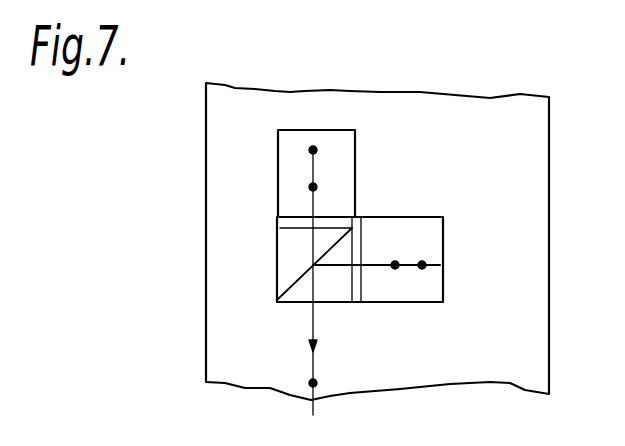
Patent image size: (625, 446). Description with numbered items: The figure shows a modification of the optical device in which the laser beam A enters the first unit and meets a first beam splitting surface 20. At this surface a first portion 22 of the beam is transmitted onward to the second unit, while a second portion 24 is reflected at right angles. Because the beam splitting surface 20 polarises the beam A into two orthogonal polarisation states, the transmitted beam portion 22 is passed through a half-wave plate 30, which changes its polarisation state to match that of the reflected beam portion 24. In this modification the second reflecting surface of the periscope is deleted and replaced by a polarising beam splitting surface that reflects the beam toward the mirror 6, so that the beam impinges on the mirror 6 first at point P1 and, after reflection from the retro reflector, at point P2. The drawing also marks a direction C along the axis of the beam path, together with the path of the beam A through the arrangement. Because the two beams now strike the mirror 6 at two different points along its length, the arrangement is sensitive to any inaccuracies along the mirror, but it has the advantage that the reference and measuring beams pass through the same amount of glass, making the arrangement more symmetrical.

The mirror 6 is at (469, 112).
The half-wave plate 30 is at (278, 217).
The first portion of the beam 22 is at (313, 228).
The first beam splitting surface 20 is at (297, 283).
The second portion of the beam 24 is at (383, 267).
The first point on the mirror P1 is at (395, 262).
The second point on the mirror P2 is at (423, 262).
The center axis direction C is at (308, 352).
The laser beam A is at (308, 384).